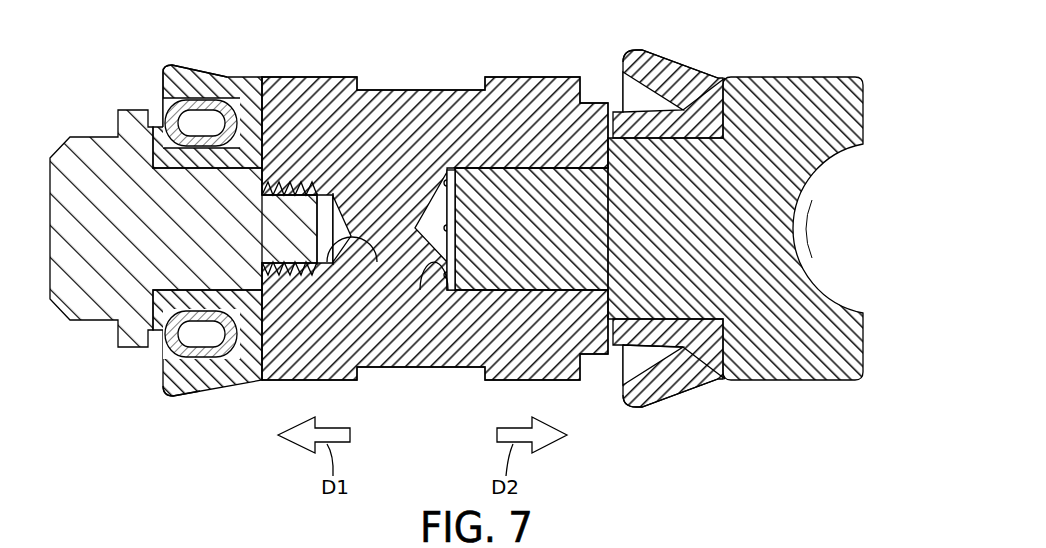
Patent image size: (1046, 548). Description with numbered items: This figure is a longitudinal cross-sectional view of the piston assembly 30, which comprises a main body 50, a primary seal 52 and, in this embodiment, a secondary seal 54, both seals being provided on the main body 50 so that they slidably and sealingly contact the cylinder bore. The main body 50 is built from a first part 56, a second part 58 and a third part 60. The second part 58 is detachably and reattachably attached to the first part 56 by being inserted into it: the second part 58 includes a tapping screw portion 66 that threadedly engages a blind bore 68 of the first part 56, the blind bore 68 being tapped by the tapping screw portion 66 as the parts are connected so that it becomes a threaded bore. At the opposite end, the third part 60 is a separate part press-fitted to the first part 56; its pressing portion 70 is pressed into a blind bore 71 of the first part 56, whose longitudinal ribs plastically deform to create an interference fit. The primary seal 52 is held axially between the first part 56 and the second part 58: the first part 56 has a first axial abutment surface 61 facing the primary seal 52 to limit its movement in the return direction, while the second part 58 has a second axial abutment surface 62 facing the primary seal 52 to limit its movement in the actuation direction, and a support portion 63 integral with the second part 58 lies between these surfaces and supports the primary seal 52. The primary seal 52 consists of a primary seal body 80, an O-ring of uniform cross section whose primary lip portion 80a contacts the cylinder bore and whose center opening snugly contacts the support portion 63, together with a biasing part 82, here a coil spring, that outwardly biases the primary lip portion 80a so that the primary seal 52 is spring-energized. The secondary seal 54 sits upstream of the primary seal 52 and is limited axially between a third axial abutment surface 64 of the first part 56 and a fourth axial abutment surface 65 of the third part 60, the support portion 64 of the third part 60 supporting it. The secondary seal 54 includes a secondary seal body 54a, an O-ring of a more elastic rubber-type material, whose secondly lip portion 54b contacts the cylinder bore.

The piston assembly 30 is at (708, 438).
The main body 50 is at (446, 64).
The primary seal 52 is at (211, 60).
The secondary seal 54 is at (689, 52).
The secondary seal body 54a is at (698, 386).
The secondly lip portion 54b is at (636, 403).
The first part 56 is at (452, 382).
The second part 58 is at (84, 137).
The third part 60 is at (805, 66).
The first axial abutment surface 61 is at (240, 95).
The second axial abutment surface 62 is at (160, 100).
The support portion 63 is at (197, 330).
The third axial abutment surface 64 is at (616, 118).
The fourth axial abutment surface 65 is at (706, 92).
The tapping screw portion 66 is at (300, 187).
The blind bore 68 is at (354, 240).
The pressing portion 70 is at (522, 285).
The blind bore 71 is at (446, 285).
The primary seal body 80 is at (240, 384).
The primary lip portion 80a is at (163, 383).
The biasing part 82 is at (186, 80).